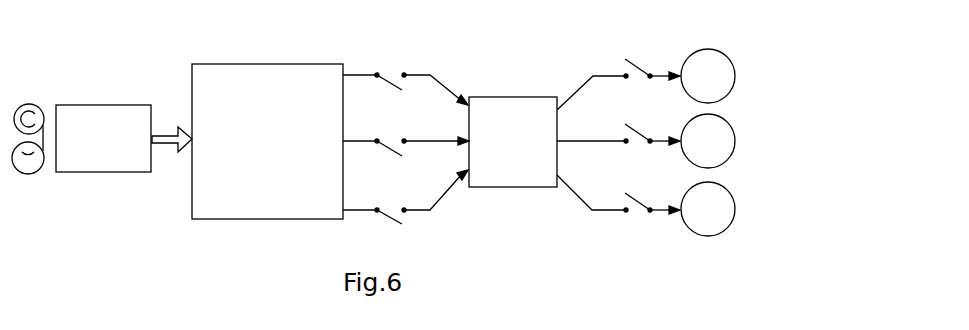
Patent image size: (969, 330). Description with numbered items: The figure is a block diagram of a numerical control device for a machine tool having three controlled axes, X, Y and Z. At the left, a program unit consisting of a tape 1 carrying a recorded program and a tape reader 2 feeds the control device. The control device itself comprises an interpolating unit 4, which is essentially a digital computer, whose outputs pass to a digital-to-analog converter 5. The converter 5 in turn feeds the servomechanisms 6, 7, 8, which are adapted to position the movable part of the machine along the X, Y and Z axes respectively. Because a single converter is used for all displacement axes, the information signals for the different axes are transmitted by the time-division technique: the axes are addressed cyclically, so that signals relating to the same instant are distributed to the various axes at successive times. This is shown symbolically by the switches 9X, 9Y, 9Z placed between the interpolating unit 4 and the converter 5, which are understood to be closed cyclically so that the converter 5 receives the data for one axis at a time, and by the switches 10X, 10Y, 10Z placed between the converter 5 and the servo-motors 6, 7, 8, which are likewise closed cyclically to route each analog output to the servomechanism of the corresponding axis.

The tape 1 is at (28, 174).
The tape reader 2 is at (102, 172).
The interpolating unit 4 is at (277, 64).
The digital-to-analog converter 5 is at (517, 97).
The servomechanism 6 is at (708, 49).
The servomechanism 7 is at (730, 110).
The servomechanism 8 is at (705, 236).
The switch 9X is at (423, 74).
The switch 9Y is at (423, 140).
The switch 9Z is at (423, 208).
The switch 10X is at (637, 64).
The switch 10Y is at (637, 129).
The switch 10Z is at (637, 198).